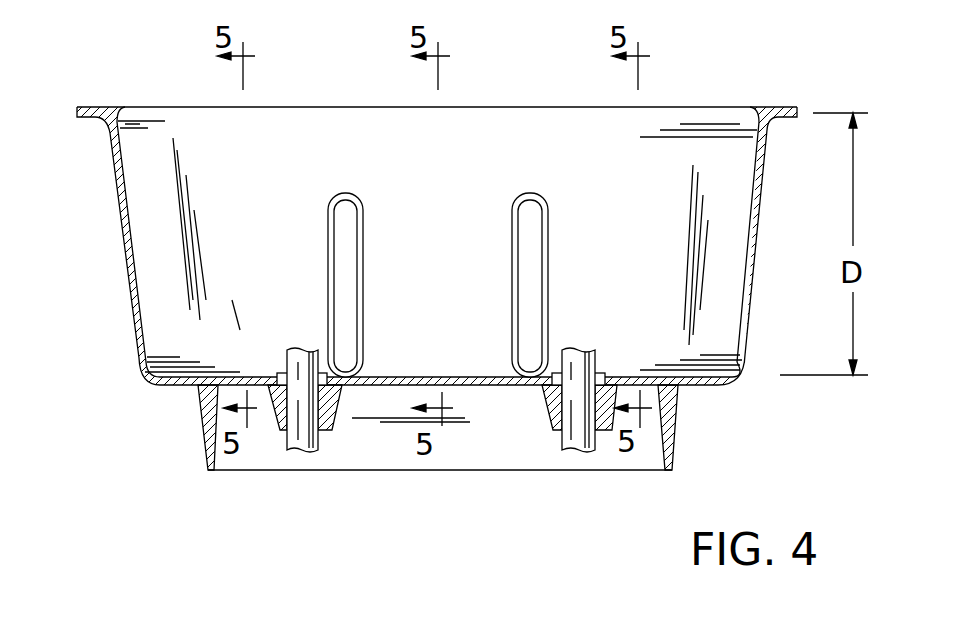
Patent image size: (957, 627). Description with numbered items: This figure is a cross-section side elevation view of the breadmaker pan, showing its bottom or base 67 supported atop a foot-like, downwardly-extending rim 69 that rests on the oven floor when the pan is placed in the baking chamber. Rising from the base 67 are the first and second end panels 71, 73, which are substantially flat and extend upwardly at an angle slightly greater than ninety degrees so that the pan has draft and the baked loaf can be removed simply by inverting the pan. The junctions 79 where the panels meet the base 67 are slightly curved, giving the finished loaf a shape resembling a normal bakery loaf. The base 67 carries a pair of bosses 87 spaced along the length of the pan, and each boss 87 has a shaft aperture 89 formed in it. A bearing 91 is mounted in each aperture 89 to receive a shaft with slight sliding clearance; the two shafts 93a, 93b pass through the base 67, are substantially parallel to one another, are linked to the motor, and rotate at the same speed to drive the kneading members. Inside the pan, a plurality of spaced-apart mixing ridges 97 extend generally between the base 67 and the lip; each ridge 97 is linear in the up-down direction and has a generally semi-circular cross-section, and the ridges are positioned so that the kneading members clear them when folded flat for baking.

The base 67 is at (397, 378).
The rim 69 is at (673, 437).
The first end panel 71 is at (122, 213).
The second end panel 73 is at (750, 197).
The junctions 79 is at (155, 387).
The bosses 87 is at (328, 430).
The shaft aperture 89 is at (255, 327).
The bearing 91 is at (283, 377).
The shaft 93a is at (310, 448).
The shaft 93b is at (580, 448).
The mixing ridges 97 is at (347, 193).